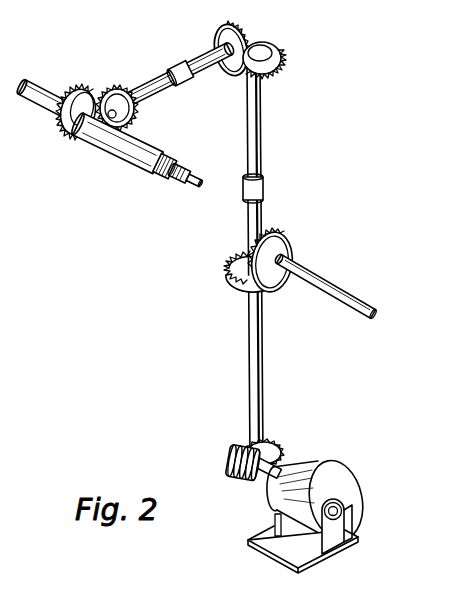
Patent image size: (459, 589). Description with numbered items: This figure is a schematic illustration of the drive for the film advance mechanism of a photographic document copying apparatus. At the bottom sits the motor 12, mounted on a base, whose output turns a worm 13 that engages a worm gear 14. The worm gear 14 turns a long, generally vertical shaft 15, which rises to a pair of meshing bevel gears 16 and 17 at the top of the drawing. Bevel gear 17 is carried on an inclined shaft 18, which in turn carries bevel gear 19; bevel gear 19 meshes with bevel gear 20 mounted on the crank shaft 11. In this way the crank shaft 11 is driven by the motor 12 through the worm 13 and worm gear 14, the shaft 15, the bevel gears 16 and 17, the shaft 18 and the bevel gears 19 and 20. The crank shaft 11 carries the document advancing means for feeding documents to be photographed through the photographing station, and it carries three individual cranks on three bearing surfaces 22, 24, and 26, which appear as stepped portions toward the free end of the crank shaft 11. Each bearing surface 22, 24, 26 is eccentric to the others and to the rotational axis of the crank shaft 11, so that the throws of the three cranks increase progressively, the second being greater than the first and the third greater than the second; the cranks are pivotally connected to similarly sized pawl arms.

The crank shaft 11 is at (115, 141).
The motor 12 is at (330, 477).
The worm 13 is at (232, 455).
The worm gear 14 is at (279, 447).
The shaft 15 is at (258, 215).
The bevel gear 16 is at (268, 49).
The bevel gear 17 is at (213, 35).
The shaft 18 is at (206, 68).
The bevel gear 19 is at (114, 86).
The bevel gear 20 is at (78, 86).
The bearing surface 22 is at (163, 171).
The bearing surface 24 is at (183, 171).
The bearing surface 26 is at (198, 189).